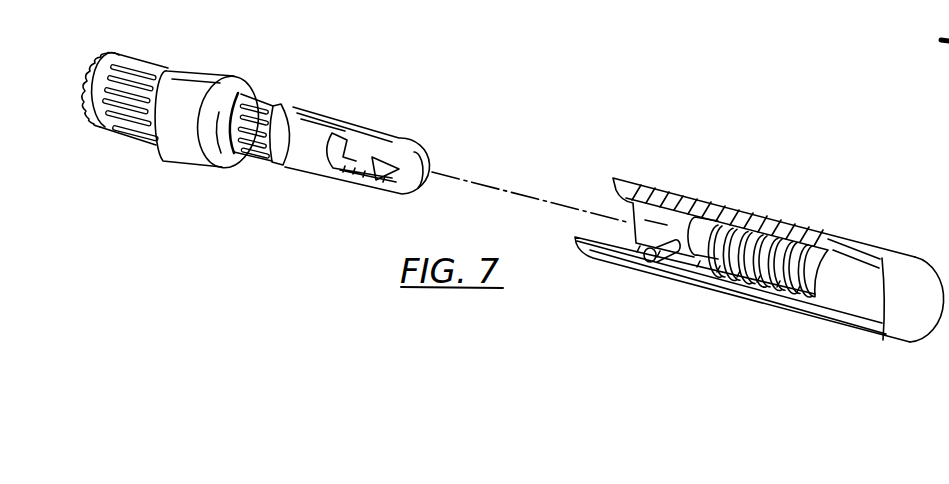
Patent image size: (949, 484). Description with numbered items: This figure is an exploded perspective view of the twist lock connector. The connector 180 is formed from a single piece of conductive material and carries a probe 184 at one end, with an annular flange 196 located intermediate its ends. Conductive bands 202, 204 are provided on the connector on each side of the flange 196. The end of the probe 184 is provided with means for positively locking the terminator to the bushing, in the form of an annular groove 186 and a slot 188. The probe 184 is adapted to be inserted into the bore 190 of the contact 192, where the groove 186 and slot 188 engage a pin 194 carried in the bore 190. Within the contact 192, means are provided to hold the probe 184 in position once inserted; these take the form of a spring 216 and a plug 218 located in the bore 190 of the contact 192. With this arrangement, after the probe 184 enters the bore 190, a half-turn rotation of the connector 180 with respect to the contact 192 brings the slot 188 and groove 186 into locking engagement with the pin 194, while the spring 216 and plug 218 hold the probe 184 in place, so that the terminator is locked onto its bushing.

The connector 180 is at (266, 74).
The conductive band 204 is at (148, 66).
The annular flange 196 is at (188, 72).
The conductive band 202 is at (281, 103).
The probe 184 is at (411, 148).
The annular groove 186 is at (337, 161).
The slot 188 is at (378, 171).
The bore 190 is at (631, 203).
The spring 216 is at (800, 223).
The plug 218 is at (707, 228).
The contact 192 is at (741, 210).
The pin 194 is at (648, 258).